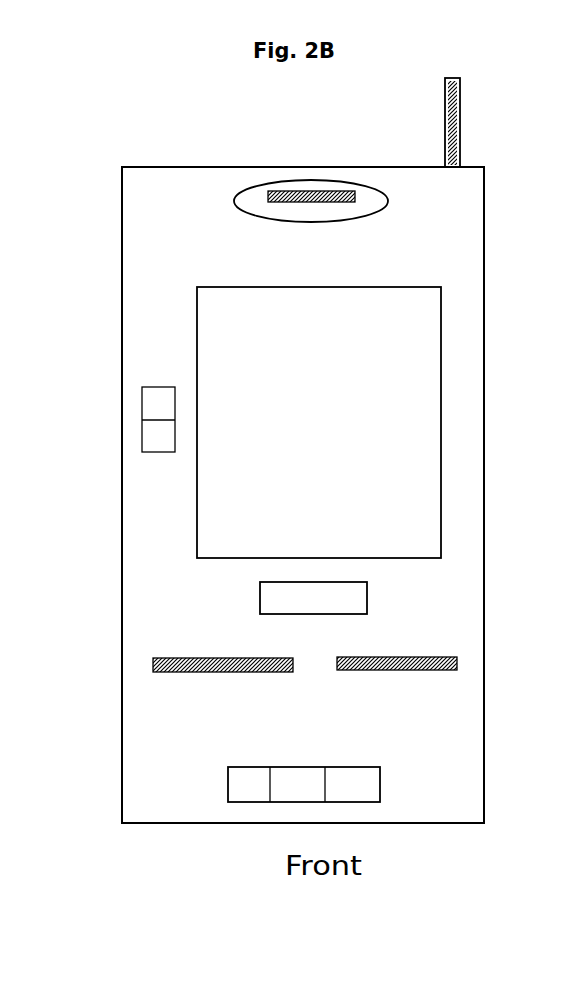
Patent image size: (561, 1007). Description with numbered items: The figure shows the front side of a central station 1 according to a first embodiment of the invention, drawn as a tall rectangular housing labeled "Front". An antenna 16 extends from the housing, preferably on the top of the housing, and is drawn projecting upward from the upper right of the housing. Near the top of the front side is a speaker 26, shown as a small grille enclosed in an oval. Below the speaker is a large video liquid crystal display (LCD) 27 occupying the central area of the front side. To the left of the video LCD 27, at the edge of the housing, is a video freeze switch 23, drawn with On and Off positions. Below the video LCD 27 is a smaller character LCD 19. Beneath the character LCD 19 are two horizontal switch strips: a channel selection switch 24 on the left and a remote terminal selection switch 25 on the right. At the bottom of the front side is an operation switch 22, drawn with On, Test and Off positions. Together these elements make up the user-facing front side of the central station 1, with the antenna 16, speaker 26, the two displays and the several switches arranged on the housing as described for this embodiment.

The central station 1 is at (486, 269).
The antenna 16 is at (461, 108).
The speaker 26 is at (375, 211).
The video liquid crystal display (LCD) 27 is at (441, 375).
The video freeze switch 23 is at (155, 453).
The character LCD 19 is at (259, 593).
The remote terminal selection switch 25 is at (438, 656).
The channel selection switch 24 is at (168, 676).
The operation switch 22 is at (362, 803).